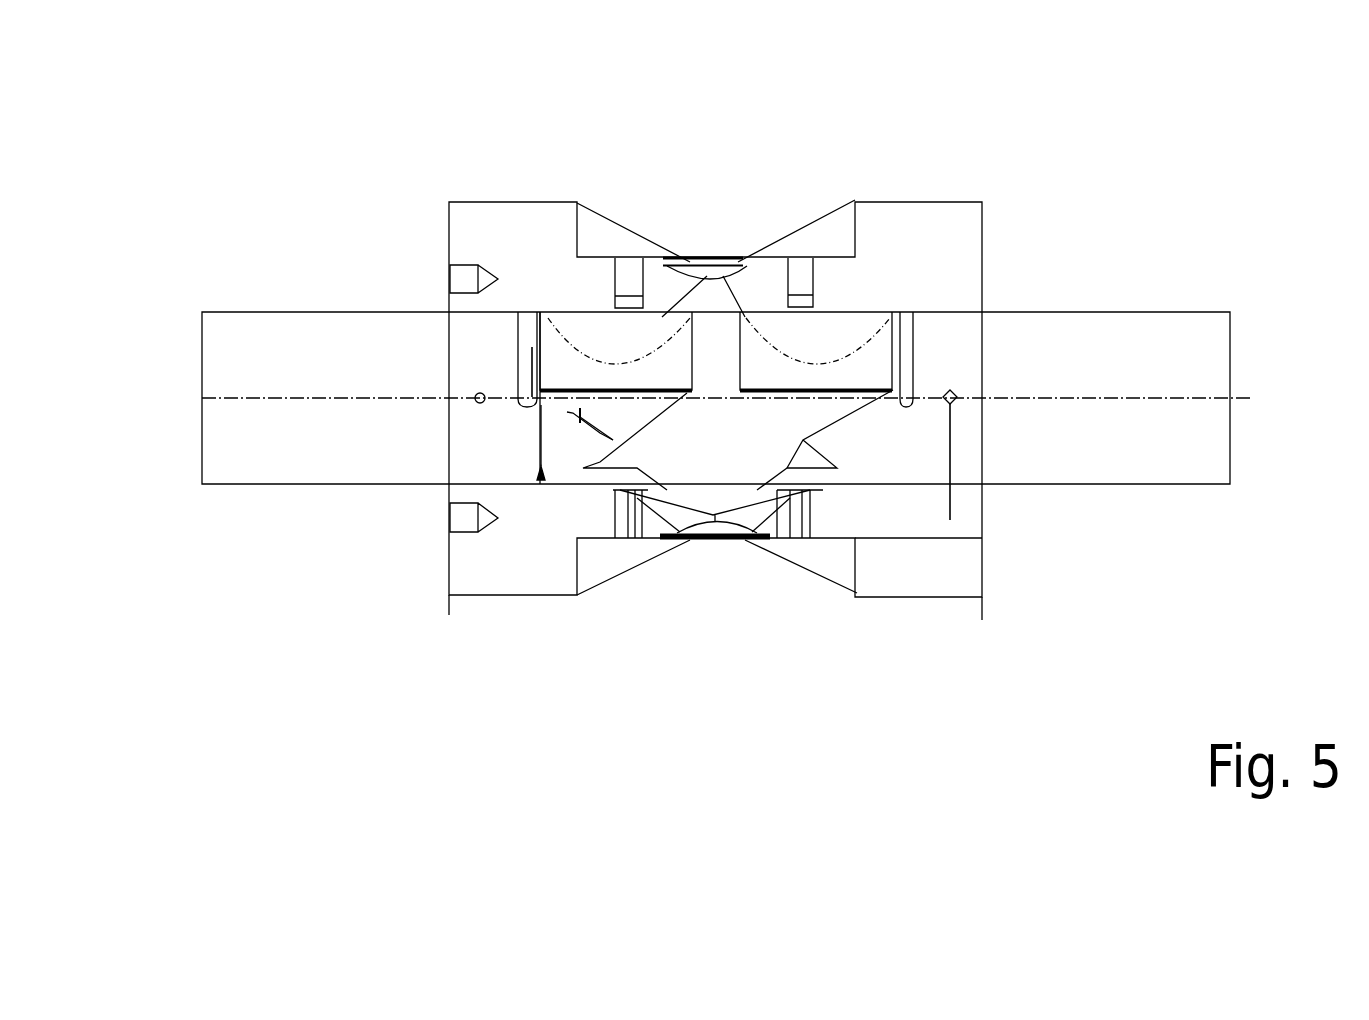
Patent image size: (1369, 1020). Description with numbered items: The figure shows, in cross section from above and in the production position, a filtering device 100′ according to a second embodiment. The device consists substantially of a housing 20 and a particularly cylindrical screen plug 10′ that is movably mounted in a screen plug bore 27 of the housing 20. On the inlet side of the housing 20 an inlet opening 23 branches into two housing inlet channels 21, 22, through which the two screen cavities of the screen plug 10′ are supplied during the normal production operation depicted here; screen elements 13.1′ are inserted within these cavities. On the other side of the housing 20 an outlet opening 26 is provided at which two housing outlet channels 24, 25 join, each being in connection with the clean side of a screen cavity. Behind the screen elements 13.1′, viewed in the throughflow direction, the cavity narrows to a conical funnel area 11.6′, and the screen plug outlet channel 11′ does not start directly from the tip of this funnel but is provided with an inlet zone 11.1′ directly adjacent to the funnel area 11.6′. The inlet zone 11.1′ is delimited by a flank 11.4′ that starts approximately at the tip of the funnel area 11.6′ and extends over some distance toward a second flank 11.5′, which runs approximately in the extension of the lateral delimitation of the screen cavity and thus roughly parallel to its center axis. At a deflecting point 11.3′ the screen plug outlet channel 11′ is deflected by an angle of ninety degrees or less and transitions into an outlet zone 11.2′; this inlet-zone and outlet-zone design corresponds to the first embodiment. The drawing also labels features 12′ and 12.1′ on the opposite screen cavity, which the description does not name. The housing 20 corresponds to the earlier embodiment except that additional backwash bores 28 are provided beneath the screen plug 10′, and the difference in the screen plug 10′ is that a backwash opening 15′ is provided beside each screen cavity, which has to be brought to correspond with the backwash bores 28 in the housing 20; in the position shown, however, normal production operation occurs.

The filtering device 100′ is at (222, 175).
The screen plug 10′ is at (403, 330).
The screen plug outlet channel 11′ is at (573, 367).
The inlet zone 11.1′ is at (575, 470).
The outlet zone 11.2′ is at (617, 540).
The deflecting point 11.3′ is at (597, 462).
The flank 11.4′ is at (567, 412).
The second flank 11.5′ is at (537, 480).
The funnel area 11.6′ is at (613, 362).
The housing part 12′ is at (850, 370).
The housing part section 12.1′ is at (833, 540).
The screen element 13.1′ is at (557, 385).
The backwash opening 15′ is at (910, 350).
The housing 20 is at (497, 237).
The housing inlet channel 21 is at (692, 315).
The housing inlet channel 22 is at (752, 312).
The inlet opening 23 is at (715, 275).
The housing outlet channel 24 is at (680, 540).
The housing outlet channel 25 is at (777, 538).
The outlet opening 26 is at (717, 538).
The screen plug bore 27 is at (467, 312).
The backwash bore 28 is at (950, 520).